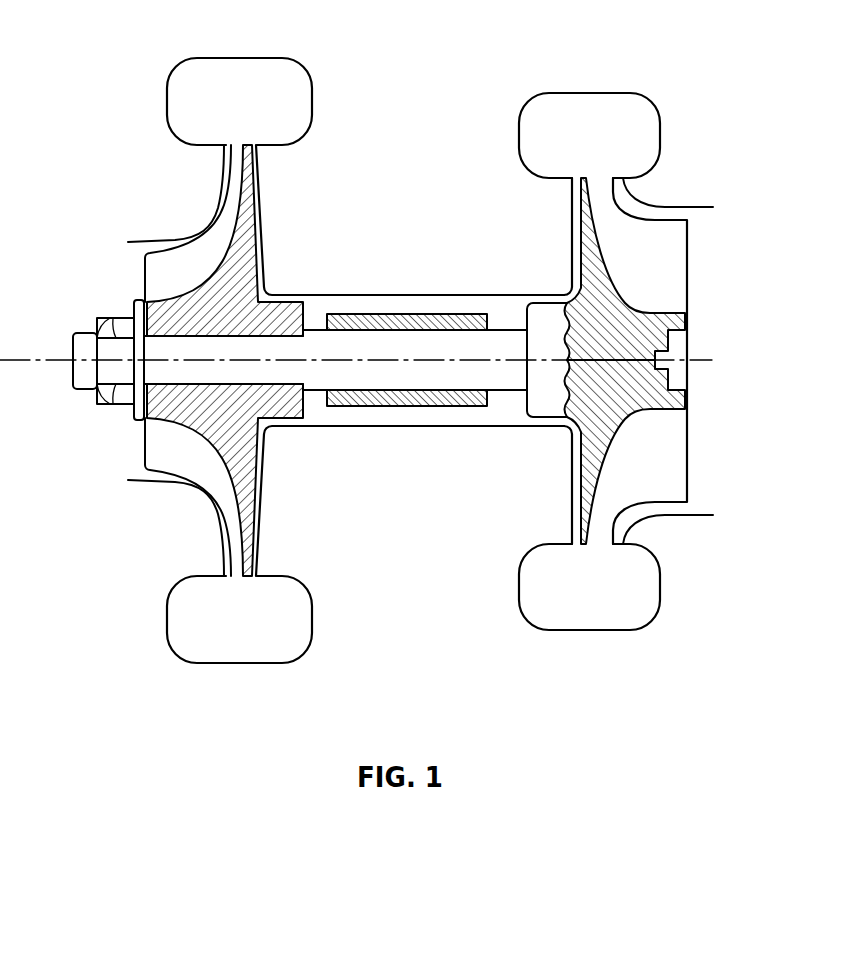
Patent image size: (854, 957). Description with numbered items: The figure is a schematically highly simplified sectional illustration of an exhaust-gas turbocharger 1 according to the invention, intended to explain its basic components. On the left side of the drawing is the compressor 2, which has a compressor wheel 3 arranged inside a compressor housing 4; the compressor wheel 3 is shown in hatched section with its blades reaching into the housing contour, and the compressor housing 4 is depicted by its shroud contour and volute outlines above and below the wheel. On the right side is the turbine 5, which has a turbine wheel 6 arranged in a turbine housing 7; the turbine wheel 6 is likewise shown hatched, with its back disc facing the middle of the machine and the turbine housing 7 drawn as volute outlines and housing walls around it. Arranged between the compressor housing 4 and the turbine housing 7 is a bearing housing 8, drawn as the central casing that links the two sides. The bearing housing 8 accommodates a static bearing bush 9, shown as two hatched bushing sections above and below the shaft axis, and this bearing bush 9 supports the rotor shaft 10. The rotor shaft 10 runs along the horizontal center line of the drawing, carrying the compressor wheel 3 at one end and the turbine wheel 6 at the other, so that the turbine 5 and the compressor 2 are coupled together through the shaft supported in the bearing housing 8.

The exhaust-gas turbocharger 1 is at (409, 148).
The compressor 2 is at (266, 441).
The compressor wheel 3 is at (197, 438).
The compressor housing 4 is at (178, 234).
The turbine 5 is at (568, 287).
The turbine wheel 6 is at (643, 407).
The turbine housing 7 is at (573, 200).
The bearing housing 8 is at (388, 428).
The static bearing bush 9 is at (450, 407).
The rotor shaft 10 is at (362, 343).